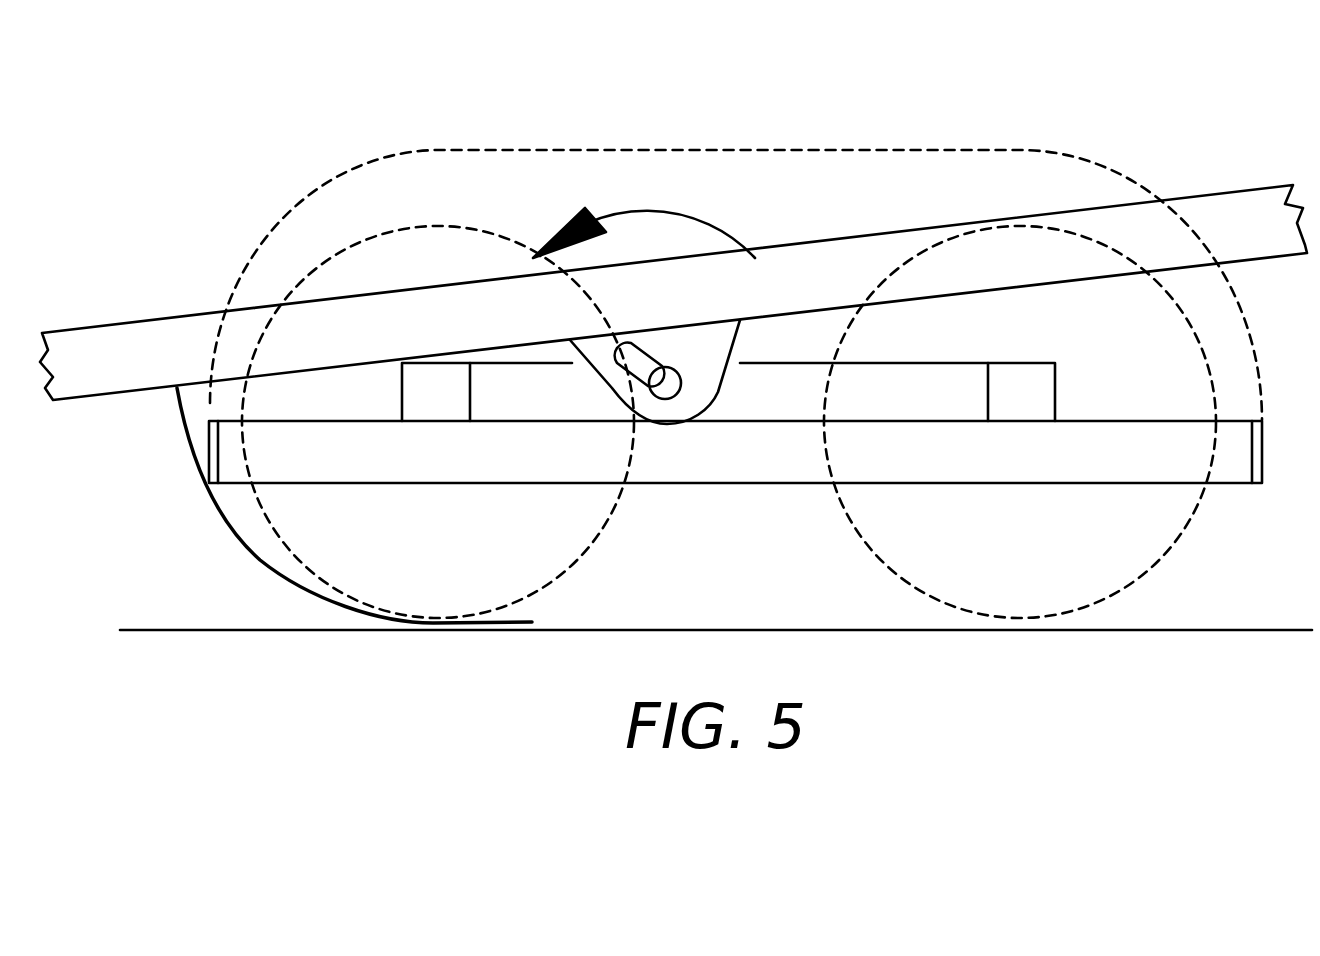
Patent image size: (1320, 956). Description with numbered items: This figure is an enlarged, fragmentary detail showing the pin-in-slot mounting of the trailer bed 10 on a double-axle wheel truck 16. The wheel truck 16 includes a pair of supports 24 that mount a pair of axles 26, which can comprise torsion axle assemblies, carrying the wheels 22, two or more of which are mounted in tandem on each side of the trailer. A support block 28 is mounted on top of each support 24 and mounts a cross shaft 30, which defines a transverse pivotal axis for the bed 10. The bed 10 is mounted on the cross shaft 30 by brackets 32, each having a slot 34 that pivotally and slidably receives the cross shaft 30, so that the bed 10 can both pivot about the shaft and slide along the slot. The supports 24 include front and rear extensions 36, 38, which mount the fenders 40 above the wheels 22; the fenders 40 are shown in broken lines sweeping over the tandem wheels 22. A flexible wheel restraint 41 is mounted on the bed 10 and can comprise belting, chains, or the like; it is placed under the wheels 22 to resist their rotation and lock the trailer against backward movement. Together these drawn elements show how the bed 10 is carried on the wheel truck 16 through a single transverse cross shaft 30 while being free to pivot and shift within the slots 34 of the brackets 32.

The bed 10 is at (1218, 189).
The wheel truck 16 is at (330, 120).
The wheels 22 is at (1167, 552).
The supports 24 is at (730, 468).
The axles 26 is at (422, 421).
The support block 28 is at (848, 413).
The cross shaft 30 is at (672, 357).
The brackets 32 is at (722, 366).
The slots 34 is at (612, 332).
The front extension 36 is at (1265, 453).
The rear extension 38 is at (207, 455).
The fenders 40 is at (887, 150).
The flexible wheel restraint 41 is at (520, 622).